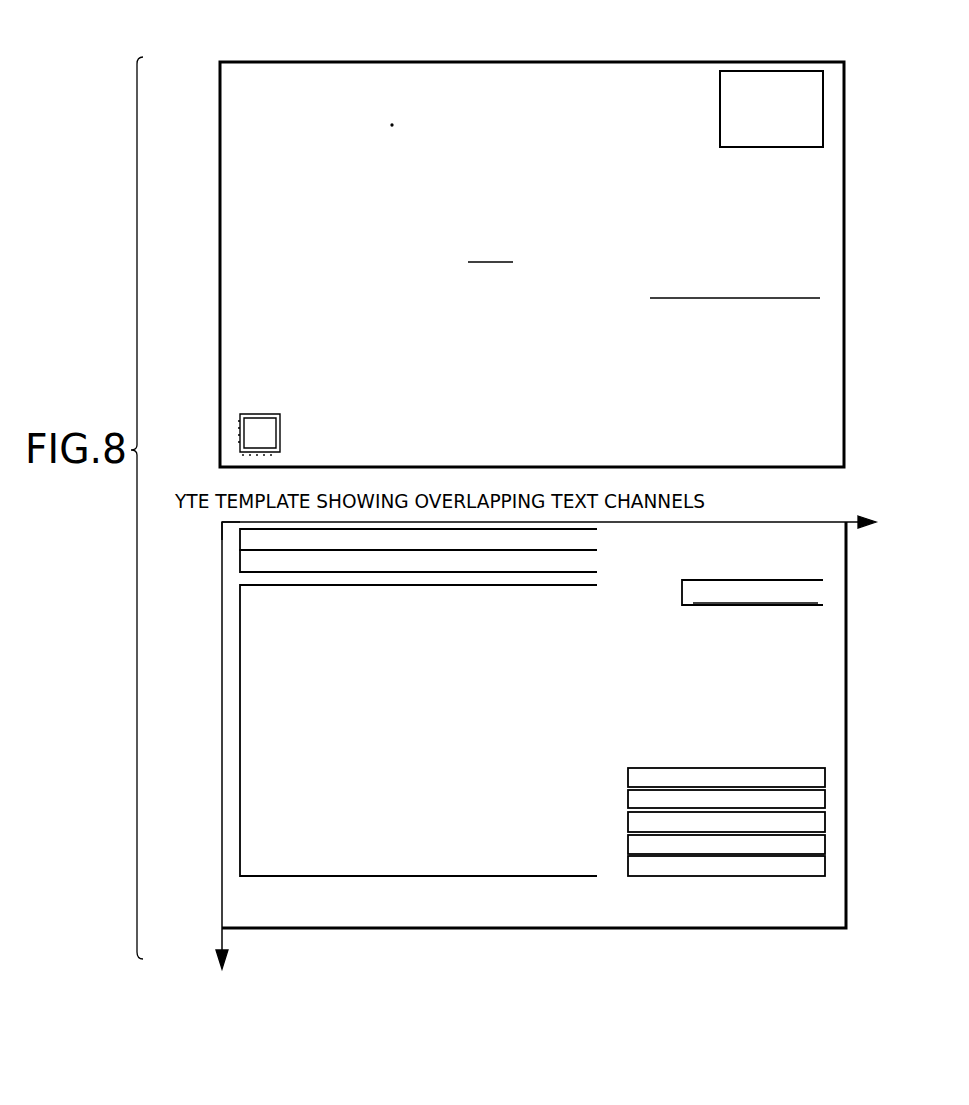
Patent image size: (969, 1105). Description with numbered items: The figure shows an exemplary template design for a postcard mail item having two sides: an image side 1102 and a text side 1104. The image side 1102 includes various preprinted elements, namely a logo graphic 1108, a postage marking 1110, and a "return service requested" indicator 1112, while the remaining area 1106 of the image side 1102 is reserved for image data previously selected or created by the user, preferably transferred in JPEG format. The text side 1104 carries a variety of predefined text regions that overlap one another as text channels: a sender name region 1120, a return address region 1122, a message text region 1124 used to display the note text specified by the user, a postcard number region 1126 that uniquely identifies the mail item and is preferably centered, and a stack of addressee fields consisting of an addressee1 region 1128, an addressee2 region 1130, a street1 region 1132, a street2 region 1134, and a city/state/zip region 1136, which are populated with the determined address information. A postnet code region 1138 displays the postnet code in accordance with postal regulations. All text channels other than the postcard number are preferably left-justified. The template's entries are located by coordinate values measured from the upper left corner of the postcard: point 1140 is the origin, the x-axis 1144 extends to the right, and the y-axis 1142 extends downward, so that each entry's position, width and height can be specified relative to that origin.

The image side 1102 is at (220, 245).
The text side 1104 is at (222, 688).
The remaining area 1106 is at (492, 250).
The logo graphic 1108 is at (282, 417).
The postage marking 1110 is at (720, 124).
The return service requested indicator 1112 is at (733, 299).
The sender name region 1120 is at (592, 538).
The return address region 1122 is at (592, 558).
The message text region 1124 is at (593, 642).
The postcard number region 1126 is at (755, 606).
The addressee1 region 1128 is at (825, 775).
The addressee2 region 1130 is at (825, 797).
The street1 region 1132 is at (825, 820).
The street2 region 1134 is at (825, 843).
The city/state/zip region 1136 is at (825, 866).
The postnet code region 1138 is at (612, 913).
The origin point 1140 is at (222, 525).
The y-axis 1142 is at (222, 938).
The x-axis 1144 is at (853, 526).